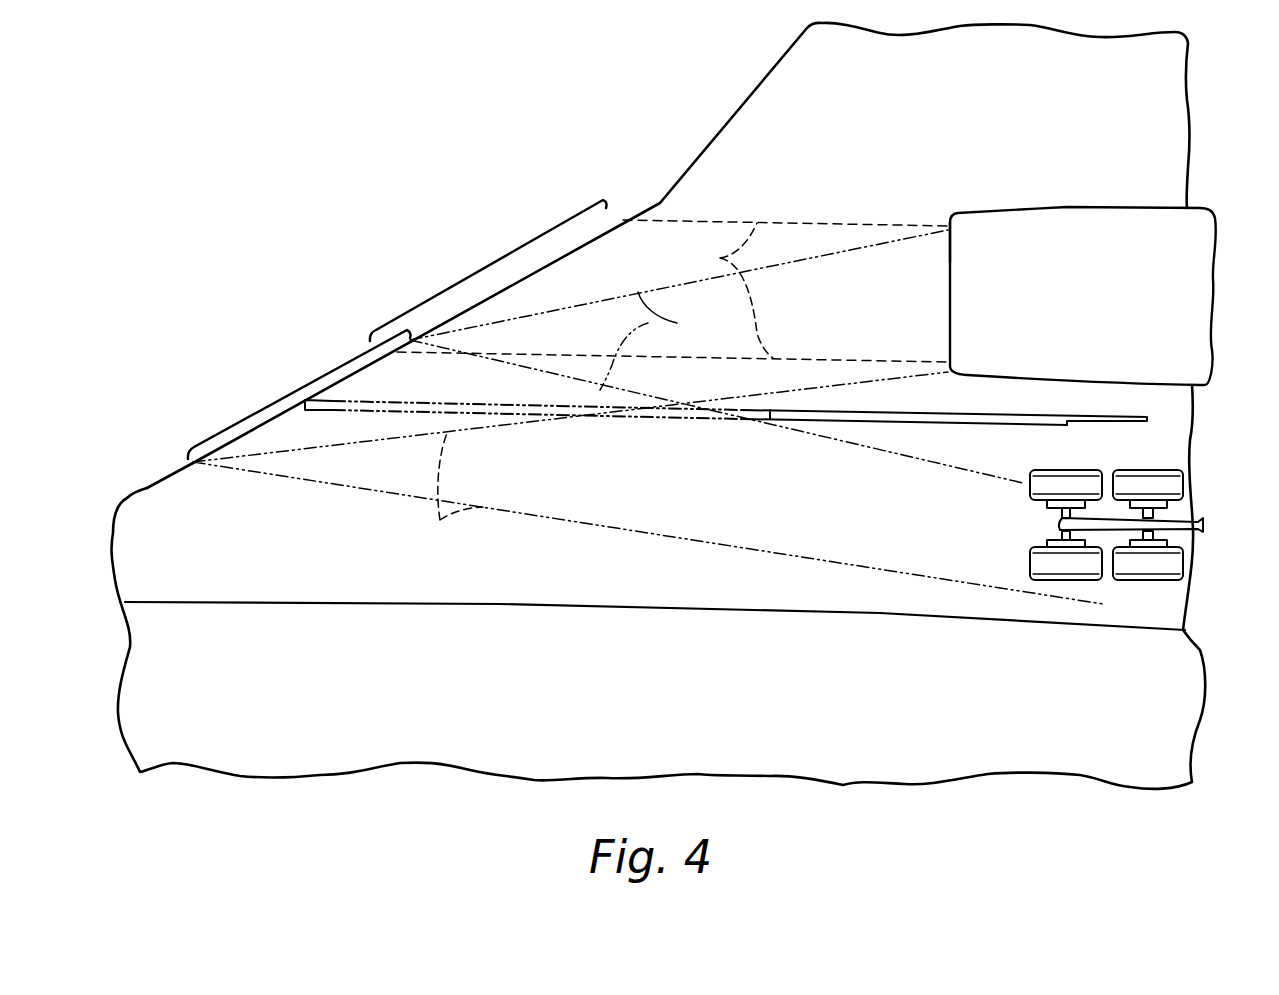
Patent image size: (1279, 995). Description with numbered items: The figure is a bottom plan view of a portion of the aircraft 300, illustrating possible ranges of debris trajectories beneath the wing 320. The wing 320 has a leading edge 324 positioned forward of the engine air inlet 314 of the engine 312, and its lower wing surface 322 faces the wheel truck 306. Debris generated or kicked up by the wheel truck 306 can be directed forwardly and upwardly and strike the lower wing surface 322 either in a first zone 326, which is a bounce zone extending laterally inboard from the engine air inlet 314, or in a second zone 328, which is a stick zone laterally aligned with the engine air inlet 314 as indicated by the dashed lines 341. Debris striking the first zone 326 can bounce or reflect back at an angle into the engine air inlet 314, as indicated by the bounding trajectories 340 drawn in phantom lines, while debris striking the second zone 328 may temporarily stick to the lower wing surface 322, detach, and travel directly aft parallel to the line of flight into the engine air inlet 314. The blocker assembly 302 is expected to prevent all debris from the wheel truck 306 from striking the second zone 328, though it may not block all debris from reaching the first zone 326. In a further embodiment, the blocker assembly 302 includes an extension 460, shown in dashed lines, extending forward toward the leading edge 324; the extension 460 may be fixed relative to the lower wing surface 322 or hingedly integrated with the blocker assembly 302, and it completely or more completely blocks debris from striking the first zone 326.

The aircraft 300 is at (262, 271).
The blocker assembly 302 is at (1075, 404).
The wheel truck 306 is at (1030, 490).
The engine 312 is at (1097, 309).
The engine air inlet 314 is at (947, 260).
The wing 320 is at (730, 116).
The lower wing surface 322 is at (273, 556).
The leading edge 324 is at (147, 486).
The first zone 326 is at (297, 388).
The second zone 328 is at (497, 258).
The bounding trajectories 340 is at (648, 323).
The dashed lines 341 is at (720, 258).
The extension 460 is at (637, 418).